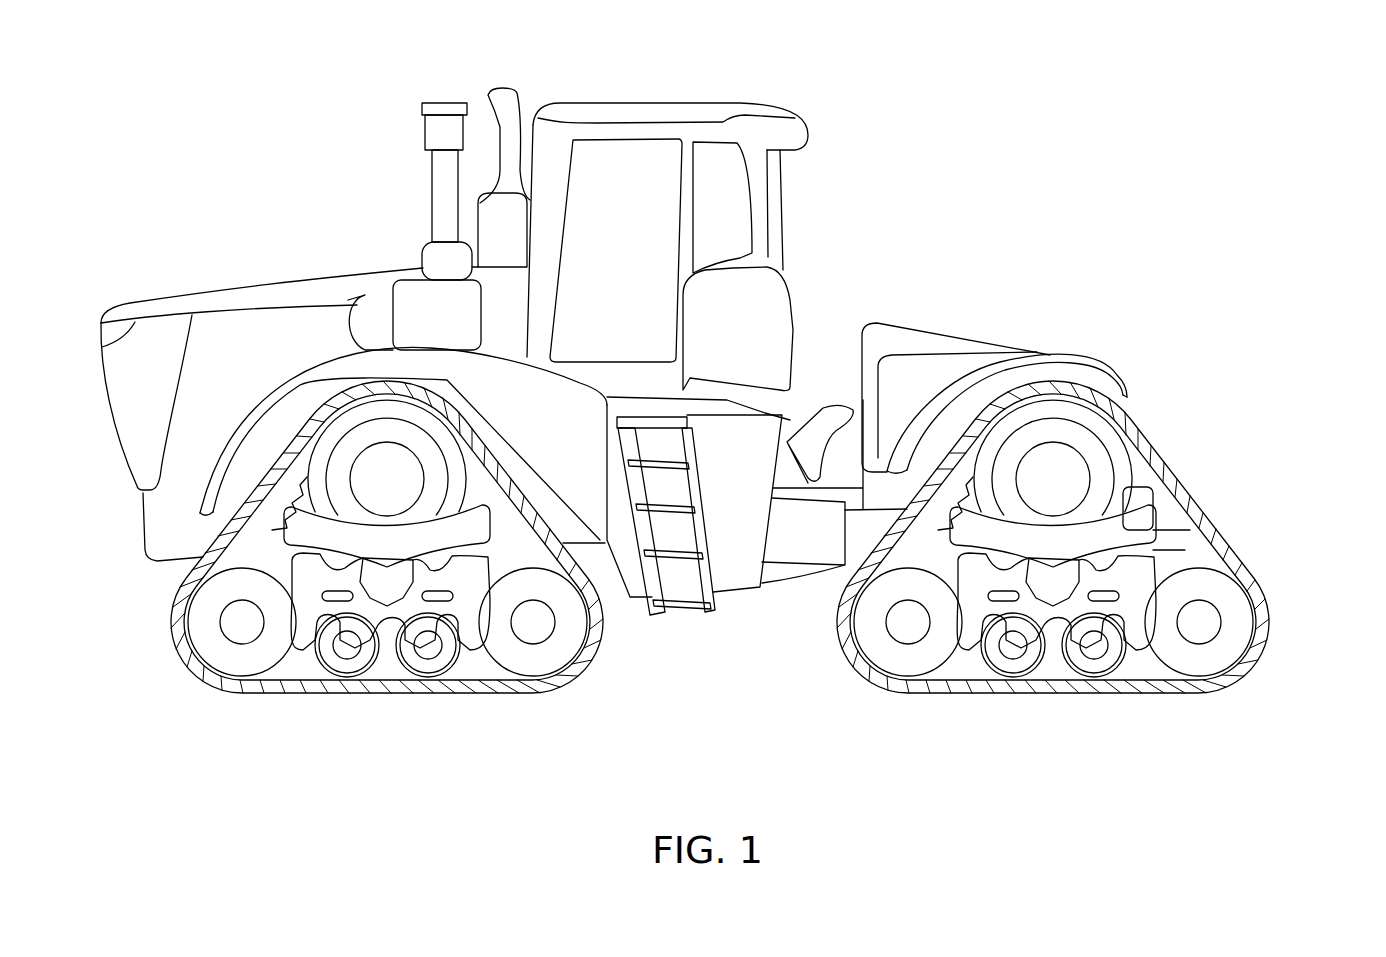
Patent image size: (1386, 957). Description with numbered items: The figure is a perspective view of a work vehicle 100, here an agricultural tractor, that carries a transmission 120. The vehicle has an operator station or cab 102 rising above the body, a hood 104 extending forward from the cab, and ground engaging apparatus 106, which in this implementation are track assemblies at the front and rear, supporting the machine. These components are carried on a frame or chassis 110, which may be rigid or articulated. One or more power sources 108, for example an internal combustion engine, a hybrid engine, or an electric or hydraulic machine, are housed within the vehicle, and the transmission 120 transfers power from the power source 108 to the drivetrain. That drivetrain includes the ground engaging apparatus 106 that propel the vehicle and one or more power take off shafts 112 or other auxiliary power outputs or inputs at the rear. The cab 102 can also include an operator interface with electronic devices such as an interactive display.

The work vehicle 100 is at (889, 93).
The cab 102 is at (645, 107).
The hood 104 is at (187, 293).
The ground engaging apparatus 106 is at (178, 648).
The power source 108 is at (287, 322).
The frame 110 is at (757, 532).
The power take off shaft 112 is at (1210, 388).
The transmission 120 is at (802, 662).